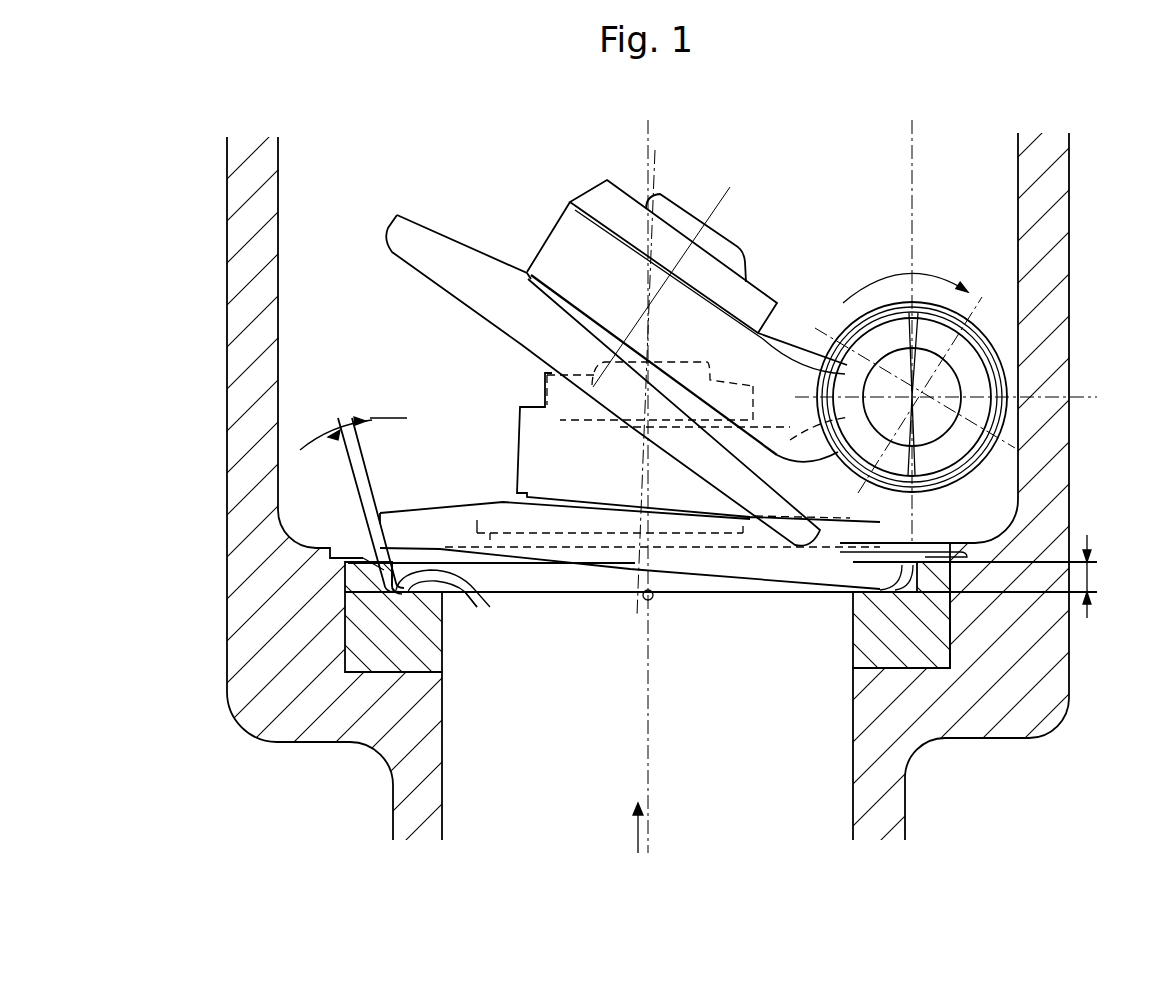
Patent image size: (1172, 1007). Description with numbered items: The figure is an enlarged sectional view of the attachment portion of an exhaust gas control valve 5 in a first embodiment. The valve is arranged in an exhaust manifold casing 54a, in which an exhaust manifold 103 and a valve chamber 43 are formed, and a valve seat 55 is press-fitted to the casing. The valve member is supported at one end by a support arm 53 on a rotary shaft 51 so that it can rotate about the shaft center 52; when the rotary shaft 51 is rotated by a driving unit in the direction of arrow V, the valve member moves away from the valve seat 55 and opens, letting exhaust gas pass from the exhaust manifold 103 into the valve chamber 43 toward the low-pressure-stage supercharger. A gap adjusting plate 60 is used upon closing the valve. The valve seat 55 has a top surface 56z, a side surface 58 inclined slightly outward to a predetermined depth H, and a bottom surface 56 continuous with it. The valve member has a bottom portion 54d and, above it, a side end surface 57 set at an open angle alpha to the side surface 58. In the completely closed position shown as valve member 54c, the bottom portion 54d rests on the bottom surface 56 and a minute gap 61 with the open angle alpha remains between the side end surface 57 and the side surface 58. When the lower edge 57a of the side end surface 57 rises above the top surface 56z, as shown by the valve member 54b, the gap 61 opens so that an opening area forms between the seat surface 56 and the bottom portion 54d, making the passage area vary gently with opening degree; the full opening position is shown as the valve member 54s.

The exhaust gas control valve 5 is at (574, 182).
The valve chamber 43 is at (390, 157).
The rotary shaft 51 is at (915, 395).
The shaft center 52 is at (940, 370).
The support arm 53 is at (710, 322).
The exhaust manifold casing 54a is at (1043, 483).
The valve member (partially open position) 54b is at (454, 520).
The valve member (completely closed position) 54c is at (477, 607).
The bottom portion 54d is at (727, 578).
The valve member (full opening position) 54s is at (443, 258).
The valve seat 55 is at (935, 620).
The bottom surface 56 is at (397, 655).
The top surface 56z is at (387, 548).
The side end surface 57 is at (400, 547).
The lower edge 57a is at (490, 607).
The side surface 58 is at (397, 597).
The gap adjusting plate 60 is at (660, 233).
The minute gap 61 is at (372, 580).
The exhaust manifold 103 is at (575, 835).